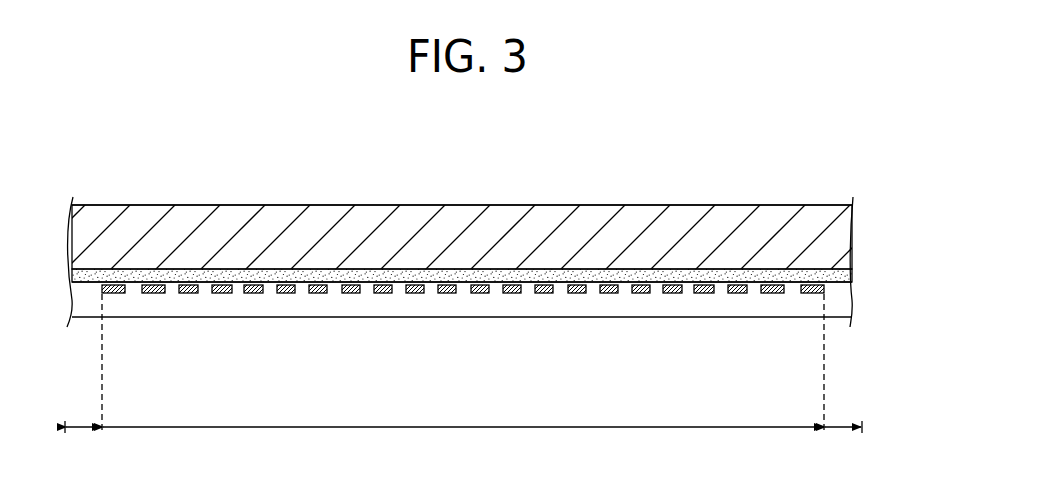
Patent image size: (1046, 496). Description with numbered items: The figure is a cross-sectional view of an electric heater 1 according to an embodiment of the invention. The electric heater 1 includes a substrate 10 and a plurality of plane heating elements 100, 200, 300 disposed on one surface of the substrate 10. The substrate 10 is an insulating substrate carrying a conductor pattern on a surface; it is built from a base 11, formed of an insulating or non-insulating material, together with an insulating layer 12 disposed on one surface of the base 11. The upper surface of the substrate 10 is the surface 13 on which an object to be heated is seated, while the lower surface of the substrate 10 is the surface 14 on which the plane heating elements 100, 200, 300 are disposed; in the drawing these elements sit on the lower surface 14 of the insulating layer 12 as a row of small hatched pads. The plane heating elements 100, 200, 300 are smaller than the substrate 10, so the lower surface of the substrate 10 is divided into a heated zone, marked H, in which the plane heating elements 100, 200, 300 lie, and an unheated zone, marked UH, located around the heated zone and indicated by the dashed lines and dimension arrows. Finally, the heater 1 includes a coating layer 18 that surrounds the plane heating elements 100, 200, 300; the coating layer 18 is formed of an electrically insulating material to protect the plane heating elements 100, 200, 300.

The electric heater 1 is at (840, 166).
The substrate 10 is at (907, 233).
The base 11 is at (845, 238).
The insulating layer 12 is at (845, 275).
The surface on which an object to be heated is seated 13 is at (238, 205).
The surface on which the plane heating elements are disposed 14 is at (190, 285).
The coating layer 18 is at (845, 300).
The plane heating element 100 is at (277, 297).
The plane heating element 200 is at (179, 297).
The plane heating element 300 is at (102, 297).